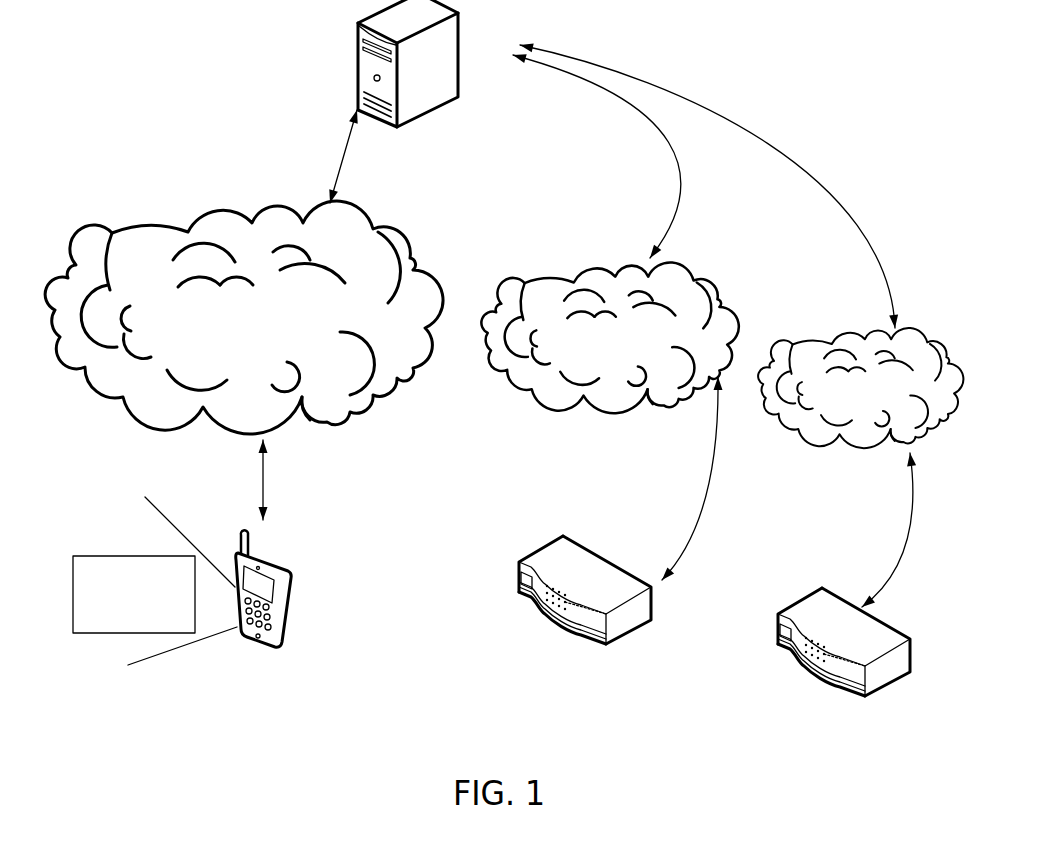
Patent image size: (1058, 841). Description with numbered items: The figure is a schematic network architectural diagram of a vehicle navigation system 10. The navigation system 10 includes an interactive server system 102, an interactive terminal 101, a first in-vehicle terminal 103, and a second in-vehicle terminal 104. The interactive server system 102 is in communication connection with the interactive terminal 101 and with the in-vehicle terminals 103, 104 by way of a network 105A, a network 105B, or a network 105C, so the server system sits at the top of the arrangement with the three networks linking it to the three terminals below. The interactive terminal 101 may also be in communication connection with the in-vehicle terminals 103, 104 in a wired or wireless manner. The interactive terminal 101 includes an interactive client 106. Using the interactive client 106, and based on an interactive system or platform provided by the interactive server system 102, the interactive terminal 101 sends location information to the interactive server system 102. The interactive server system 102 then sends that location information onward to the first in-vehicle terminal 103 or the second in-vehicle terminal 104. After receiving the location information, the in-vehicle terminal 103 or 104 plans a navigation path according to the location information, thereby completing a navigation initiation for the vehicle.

The vehicle navigation system 10 is at (837, 110).
The interactive terminal 101 is at (277, 577).
The interactive server system 102 is at (353, 0).
The first in-vehicle terminal 103 is at (590, 547).
The second in-vehicle terminal 104 is at (841, 592).
The network 105A is at (242, 215).
The network 105B is at (585, 270).
The network 105C is at (853, 336).
The interactive client 106 is at (160, 555).